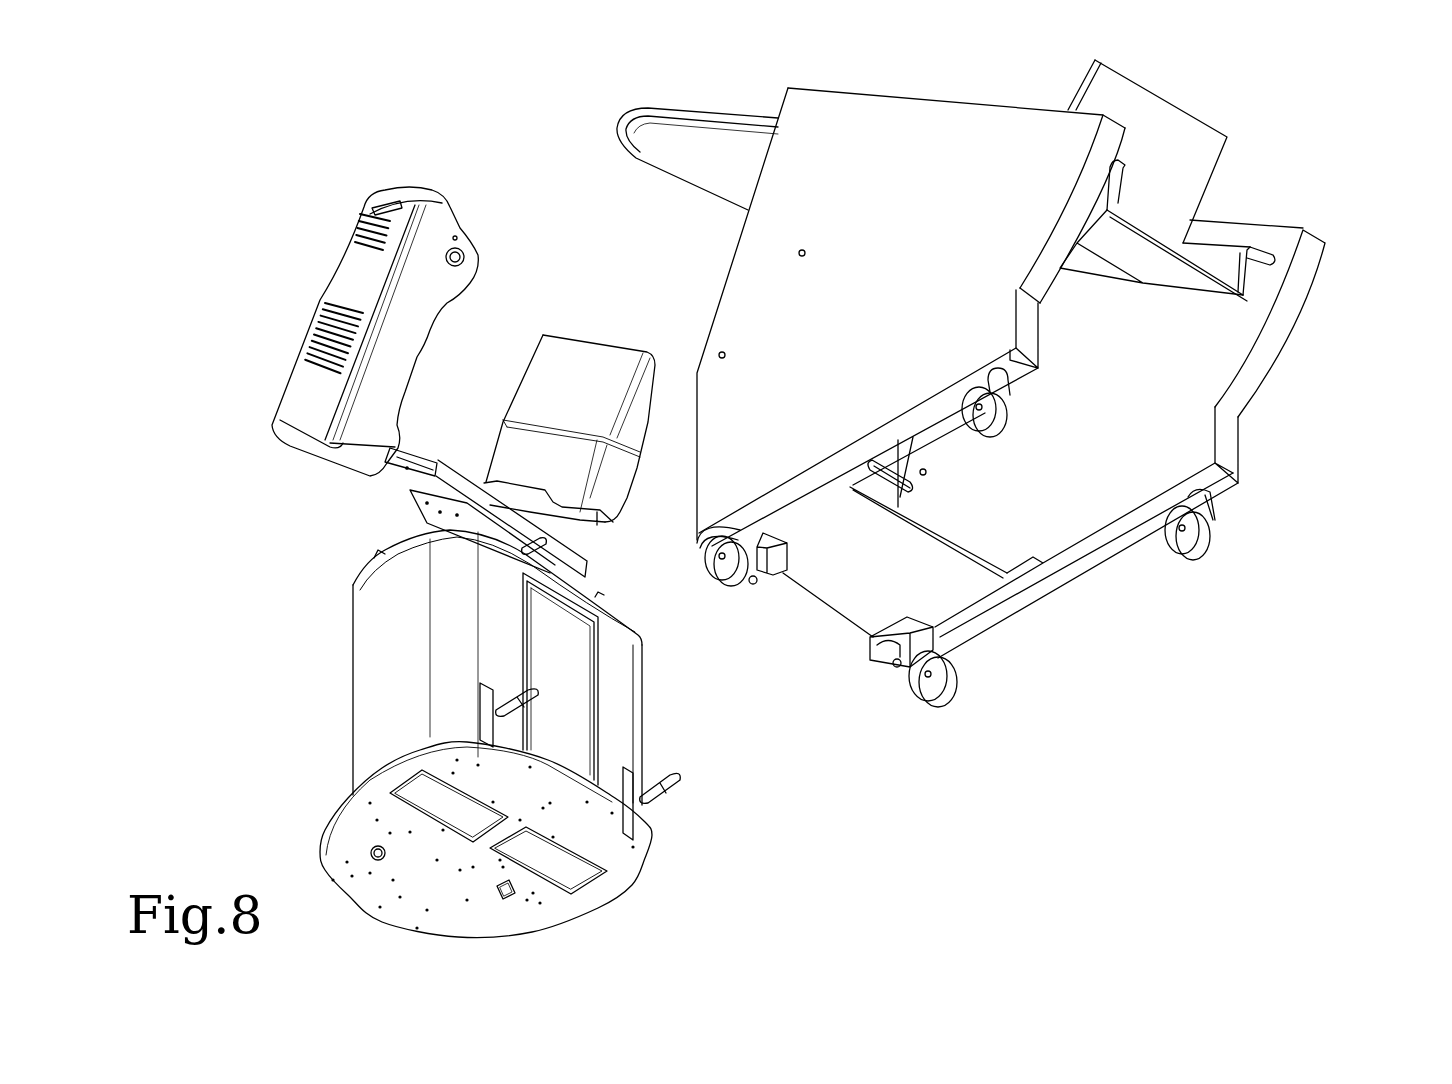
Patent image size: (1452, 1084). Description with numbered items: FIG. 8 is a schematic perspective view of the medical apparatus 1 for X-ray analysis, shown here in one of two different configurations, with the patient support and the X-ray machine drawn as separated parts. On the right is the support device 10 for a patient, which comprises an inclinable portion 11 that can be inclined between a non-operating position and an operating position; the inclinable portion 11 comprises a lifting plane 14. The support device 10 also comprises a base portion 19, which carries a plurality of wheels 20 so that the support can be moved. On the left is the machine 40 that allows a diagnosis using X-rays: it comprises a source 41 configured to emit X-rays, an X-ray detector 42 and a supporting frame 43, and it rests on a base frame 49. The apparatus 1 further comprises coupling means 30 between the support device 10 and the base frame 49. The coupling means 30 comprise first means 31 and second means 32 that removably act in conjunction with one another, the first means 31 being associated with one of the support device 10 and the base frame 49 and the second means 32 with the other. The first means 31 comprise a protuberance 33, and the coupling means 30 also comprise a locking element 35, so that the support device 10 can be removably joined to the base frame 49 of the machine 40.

The medical apparatus 1 is at (1030, 814).
The support device 10 is at (1307, 368).
The inclinable portion 11 is at (652, 133).
The lifting plane 14 is at (1177, 140).
The base portion 19 is at (933, 147).
The wheels 20 is at (1213, 542).
The coupling means 30 is at (650, 719).
The first means 31 is at (493, 738).
The second means 32 is at (777, 580).
The protuberance 33 is at (533, 693).
The locking element 35 is at (755, 587).
The machine 40 is at (323, 782).
The source 41 is at (445, 202).
The X-ray detector 42 is at (583, 367).
The supporting frame 43 is at (400, 480).
The base frame 49 is at (383, 687).